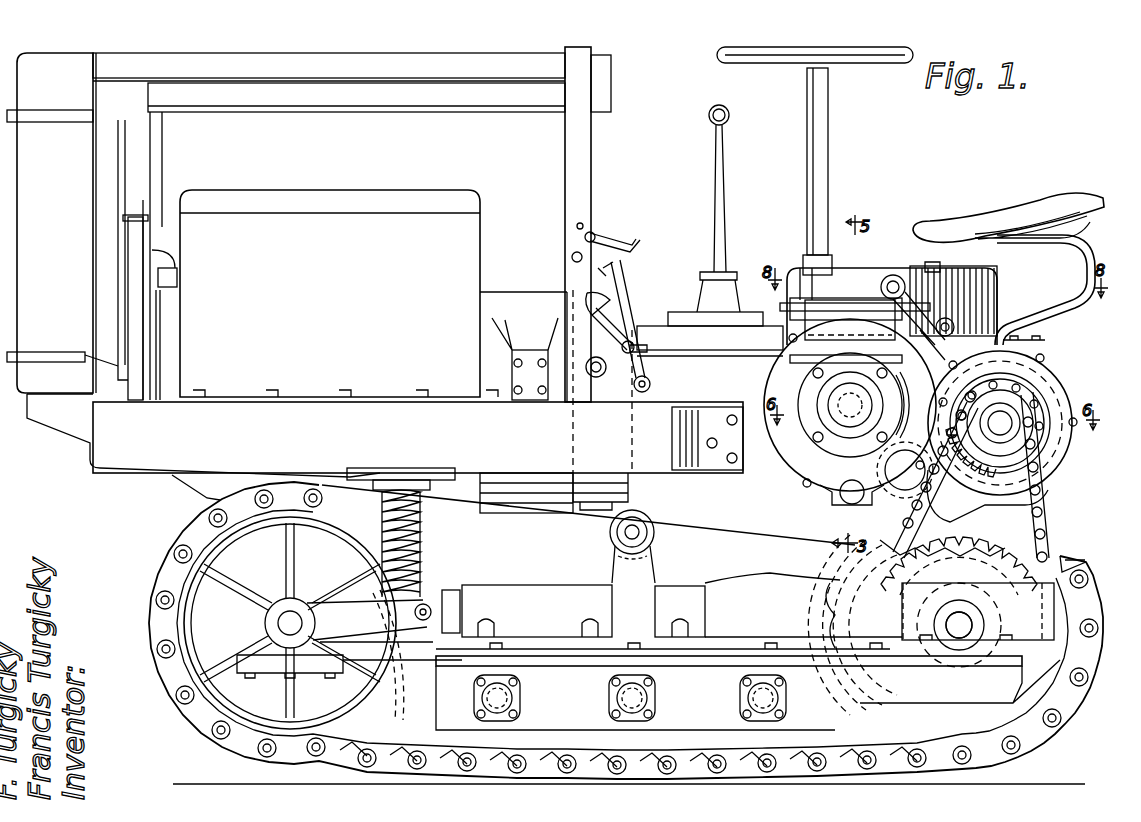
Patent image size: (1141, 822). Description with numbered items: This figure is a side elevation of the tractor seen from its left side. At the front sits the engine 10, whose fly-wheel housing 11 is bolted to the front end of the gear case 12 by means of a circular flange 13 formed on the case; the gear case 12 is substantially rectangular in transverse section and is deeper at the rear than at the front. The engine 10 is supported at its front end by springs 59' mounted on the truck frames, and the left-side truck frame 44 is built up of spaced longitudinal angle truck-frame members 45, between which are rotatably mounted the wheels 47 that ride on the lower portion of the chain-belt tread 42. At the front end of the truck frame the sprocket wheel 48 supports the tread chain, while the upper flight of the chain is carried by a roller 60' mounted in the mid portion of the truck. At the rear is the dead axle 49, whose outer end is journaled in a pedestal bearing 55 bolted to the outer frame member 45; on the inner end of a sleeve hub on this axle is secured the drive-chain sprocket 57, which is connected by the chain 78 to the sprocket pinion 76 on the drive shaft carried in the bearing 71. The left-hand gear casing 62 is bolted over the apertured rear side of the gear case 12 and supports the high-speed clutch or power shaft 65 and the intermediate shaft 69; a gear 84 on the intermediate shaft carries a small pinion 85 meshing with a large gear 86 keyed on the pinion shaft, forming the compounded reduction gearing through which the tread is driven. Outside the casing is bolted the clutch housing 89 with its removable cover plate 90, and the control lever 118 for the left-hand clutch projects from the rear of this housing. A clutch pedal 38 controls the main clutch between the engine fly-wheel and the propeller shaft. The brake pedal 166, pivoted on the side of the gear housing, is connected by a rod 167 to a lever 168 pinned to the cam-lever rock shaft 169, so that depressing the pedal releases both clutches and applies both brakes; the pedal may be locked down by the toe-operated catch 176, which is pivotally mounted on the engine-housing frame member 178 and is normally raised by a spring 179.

The engine 10 is at (339, 293).
The fly-wheel housing 11 is at (540, 505).
The gear case 12 is at (596, 490).
The circular flange 13 is at (600, 503).
The clutch pedal 38 is at (630, 272).
The chain-belt tread 42 is at (626, 630).
The left-side truck frame 44 is at (748, 651).
The longitudinal angle truck-frame member 45 is at (710, 722).
The wheels 47 is at (510, 737).
The sprocket wheels 48 is at (191, 611).
The dead axle 49 is at (965, 622).
The pedestal bearings 55 is at (974, 628).
The drive-chain sprocket 57 is at (990, 530).
The springs 59' is at (406, 532).
The rollers 60' is at (619, 546).
The left-hand gear casing 62 is at (1052, 470).
The high-speed clutch or power shaft 65 is at (832, 435).
The intermediate shaft 69 is at (905, 470).
The bearing 71 is at (1000, 420).
The sprocket pinion 76 is at (988, 455).
The chain 78 is at (1045, 520).
The gear 84 is at (939, 532).
The small pinion 85 is at (860, 430).
The large gear 86 is at (1050, 445).
The clutch housing 89 is at (786, 455).
The removable cover plate 90 is at (805, 330).
The control lever 118 is at (895, 322).
The brake pedal 166 is at (625, 292).
The rod 167 is at (651, 346).
The lever 168 is at (952, 343).
The cam-lever rock shaft 169 is at (948, 322).
The toe-operated catch 176 is at (632, 243).
The engine-housing frame member 178 is at (590, 197).
The spring 179 is at (592, 237).